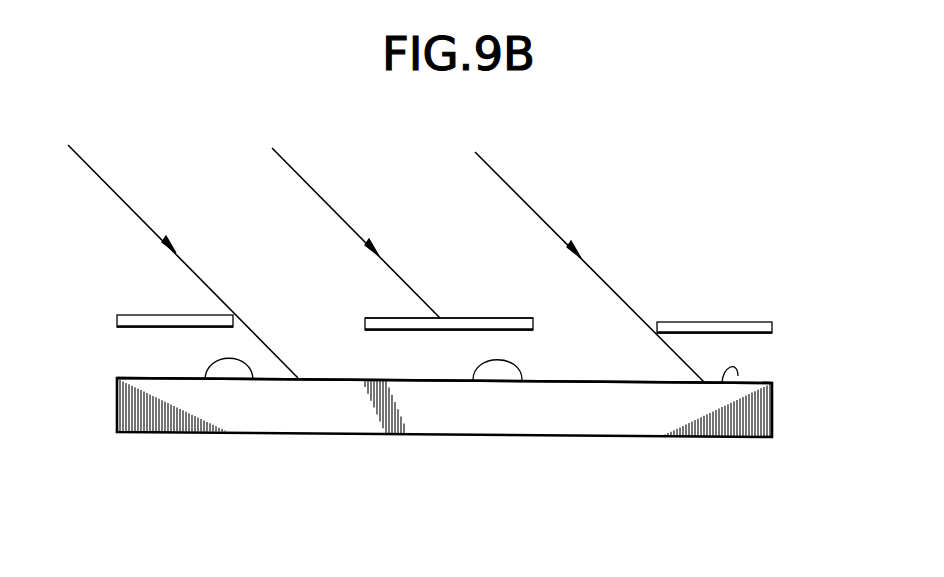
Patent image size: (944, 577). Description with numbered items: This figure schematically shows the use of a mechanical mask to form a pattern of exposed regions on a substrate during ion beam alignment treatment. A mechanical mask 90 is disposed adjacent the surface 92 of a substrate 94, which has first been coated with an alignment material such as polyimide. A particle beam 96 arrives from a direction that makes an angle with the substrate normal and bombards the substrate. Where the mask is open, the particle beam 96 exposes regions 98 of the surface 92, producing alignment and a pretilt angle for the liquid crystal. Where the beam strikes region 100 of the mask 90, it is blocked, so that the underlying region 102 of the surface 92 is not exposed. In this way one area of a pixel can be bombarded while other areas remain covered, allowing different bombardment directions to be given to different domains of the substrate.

The mechanical mask 90 is at (773, 325).
The surface 92 is at (753, 383).
The substrate 94 is at (772, 405).
The particle beam 96 is at (130, 202).
The exposed regions 98 is at (253, 382).
The mask region 100 is at (478, 317).
The unexposed region 102 is at (522, 382).